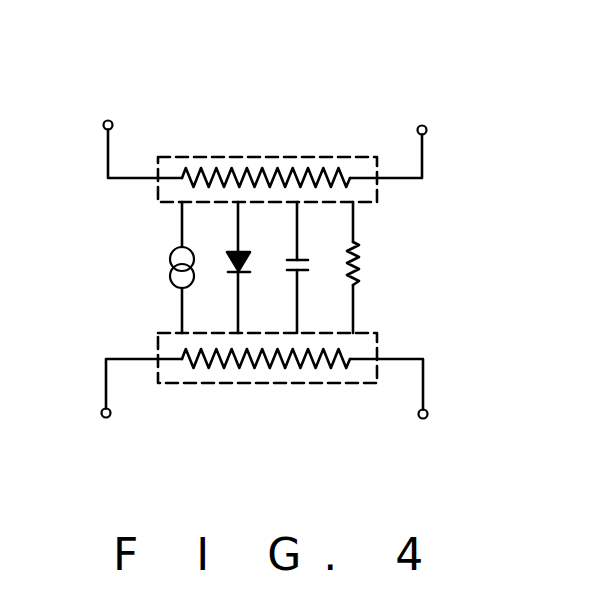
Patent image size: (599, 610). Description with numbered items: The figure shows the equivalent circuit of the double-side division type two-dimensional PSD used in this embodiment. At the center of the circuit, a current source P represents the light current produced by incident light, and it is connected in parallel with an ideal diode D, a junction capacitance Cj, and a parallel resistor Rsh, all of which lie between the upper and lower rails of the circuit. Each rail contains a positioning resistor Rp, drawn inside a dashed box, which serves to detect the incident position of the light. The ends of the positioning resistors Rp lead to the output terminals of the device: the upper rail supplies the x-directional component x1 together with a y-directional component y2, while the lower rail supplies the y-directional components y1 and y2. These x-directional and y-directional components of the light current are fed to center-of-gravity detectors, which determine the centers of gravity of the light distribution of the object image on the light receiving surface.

The positioning resistor Rp is at (267, 267).
The current source P is at (160, 267).
The ideal diode D is at (250, 267).
The junction capacitance Cj is at (312, 267).
The parallel resistor Rsh is at (382, 267).
The x-directional component x1 is at (134, 127).
The y-directional component y1 is at (138, 410).
The y-directional component y2 is at (397, 271).